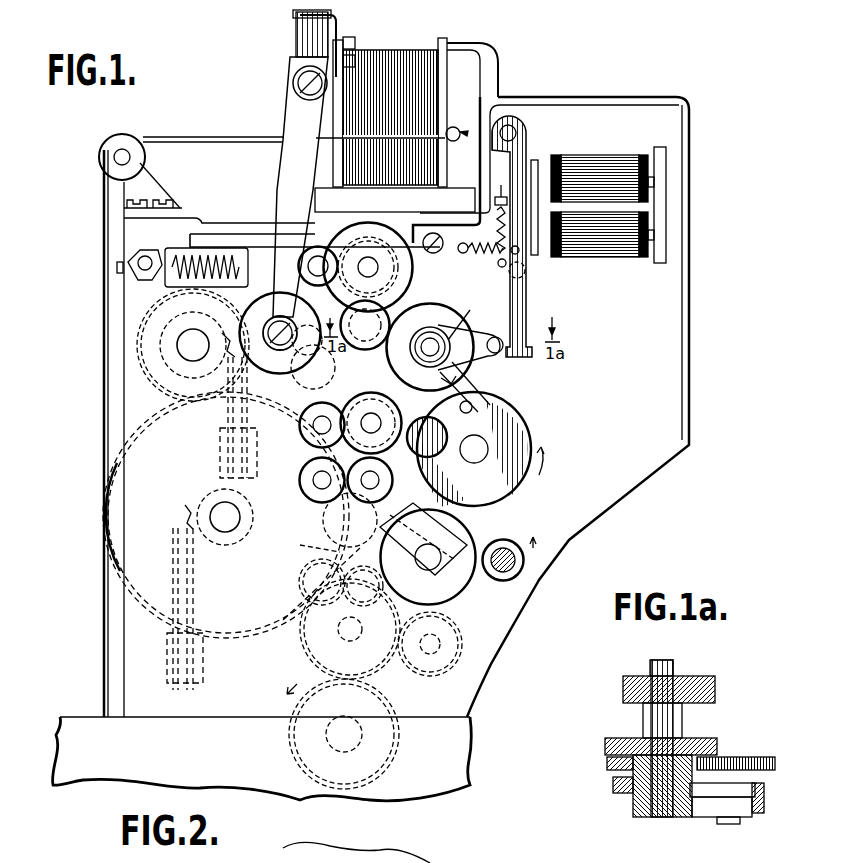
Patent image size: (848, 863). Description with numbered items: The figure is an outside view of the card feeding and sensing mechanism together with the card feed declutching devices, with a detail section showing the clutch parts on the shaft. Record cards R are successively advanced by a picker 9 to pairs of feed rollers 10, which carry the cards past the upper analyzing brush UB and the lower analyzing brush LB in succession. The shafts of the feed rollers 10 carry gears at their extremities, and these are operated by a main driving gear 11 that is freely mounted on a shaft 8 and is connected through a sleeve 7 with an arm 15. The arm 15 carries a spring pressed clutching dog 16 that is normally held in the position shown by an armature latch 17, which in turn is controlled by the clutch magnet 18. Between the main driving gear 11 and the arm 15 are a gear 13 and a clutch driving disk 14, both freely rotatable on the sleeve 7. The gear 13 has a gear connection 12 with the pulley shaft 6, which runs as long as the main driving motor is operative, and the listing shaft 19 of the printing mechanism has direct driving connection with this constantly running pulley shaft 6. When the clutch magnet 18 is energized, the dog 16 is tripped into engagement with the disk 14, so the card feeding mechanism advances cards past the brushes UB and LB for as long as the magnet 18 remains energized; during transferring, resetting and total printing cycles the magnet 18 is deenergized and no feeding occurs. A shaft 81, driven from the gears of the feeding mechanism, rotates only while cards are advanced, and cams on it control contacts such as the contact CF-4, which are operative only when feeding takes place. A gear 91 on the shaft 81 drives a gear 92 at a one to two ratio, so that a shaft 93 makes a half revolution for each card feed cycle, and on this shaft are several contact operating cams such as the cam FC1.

In FIG. 1, the record cards R is at (390, 60).
In FIG. 1, the picker 9 is at (350, 52).
In FIG. 1, the feed rollers 10 is at (355, 243).
In FIG. 1, the upper analyzing brush UB is at (326, 330).
In FIG. 1, the main driving gear 11 is at (428, 300).
In FIG. 1a, the main driving gear 11 is at (614, 739).
In FIG. 1, the shaft 8 is at (437, 343).
In FIG. 1a, the shaft 8 is at (680, 755).
In FIG. 1, the sleeve 7 is at (460, 343).
In FIG. 1a, the sleeve 7 is at (680, 817).
In FIG. 1, the arm 15 is at (466, 318).
In FIG. 1a, the arm 15 is at (710, 808).
In FIG. 1, the clutching dog 16 is at (490, 374).
In FIG. 1a, the clutching dog 16 is at (730, 786).
In FIG. 1, the clutch driving disk 14 is at (468, 386).
In FIG. 1a, the clutch driving disk 14 is at (616, 790).
In FIG. 1, the gear 13 is at (440, 402).
In FIG. 1a, the gear 13 is at (608, 768).
In FIG. 1, the armature latch 17 is at (528, 317).
In FIG. 1a, the armature latch 17 is at (762, 813).
In FIG. 1, the clutch magnet 18 is at (606, 167).
In FIG. 1, the gear connection 12 is at (490, 530).
In FIG. 1a, the gear connection 12 is at (762, 757).
In FIG. 1, the pulley shaft 6 is at (520, 560).
In FIG. 1, the lower analyzing brush LB is at (320, 548).
In FIG. 1, the listing shaft 19 is at (343, 733).
In FIG. 1, the gear 91 is at (135, 370).
In FIG. 1, the shaft 81 is at (186, 353).
In FIG. 1, the contact CF-4 is at (233, 378).
In FIG. 1, the gear 92 is at (120, 510).
In FIG. 1, the shaft 93 is at (228, 522).
In FIG. 1, the contact operating cam FC1 is at (175, 550).